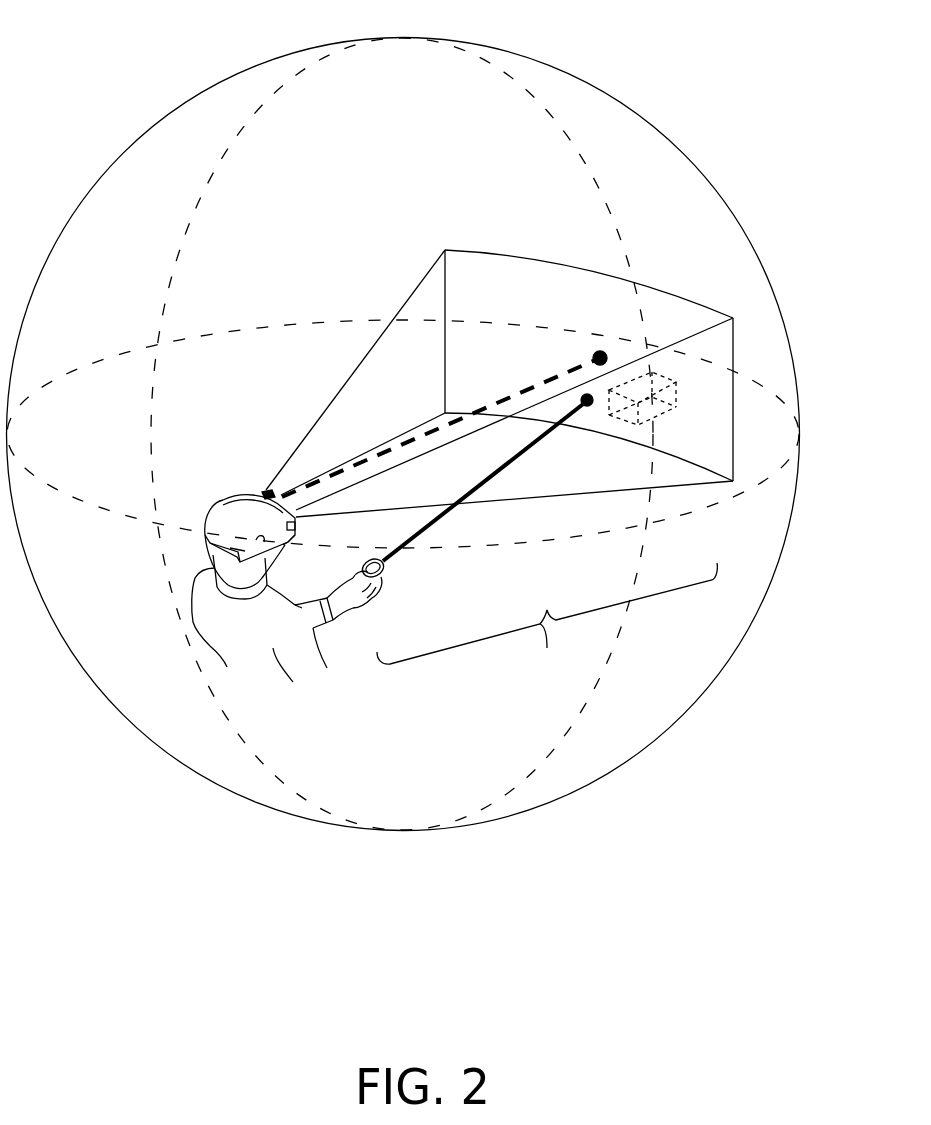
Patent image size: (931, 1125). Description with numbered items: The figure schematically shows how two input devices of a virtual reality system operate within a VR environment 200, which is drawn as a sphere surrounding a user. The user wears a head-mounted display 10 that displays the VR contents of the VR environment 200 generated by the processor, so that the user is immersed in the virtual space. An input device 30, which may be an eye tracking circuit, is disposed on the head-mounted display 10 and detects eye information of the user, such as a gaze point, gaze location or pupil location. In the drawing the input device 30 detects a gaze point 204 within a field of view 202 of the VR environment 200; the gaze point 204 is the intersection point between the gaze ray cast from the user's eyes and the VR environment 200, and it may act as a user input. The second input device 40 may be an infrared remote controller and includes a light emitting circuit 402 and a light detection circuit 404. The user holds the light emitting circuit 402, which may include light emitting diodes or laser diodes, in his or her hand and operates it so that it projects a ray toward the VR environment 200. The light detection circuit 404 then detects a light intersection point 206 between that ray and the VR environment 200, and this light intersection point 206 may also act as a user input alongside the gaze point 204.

The VR environment 200 is at (577, 98).
The field of view 202 is at (665, 307).
The gaze point 204 is at (601, 351).
The light intersection point 206 is at (587, 407).
The light detection circuit 404 is at (663, 412).
The input device 40 is at (547, 545).
The light emitting circuit 402 is at (387, 583).
The head-mounted display 10 is at (210, 503).
The input device 30 is at (268, 490).